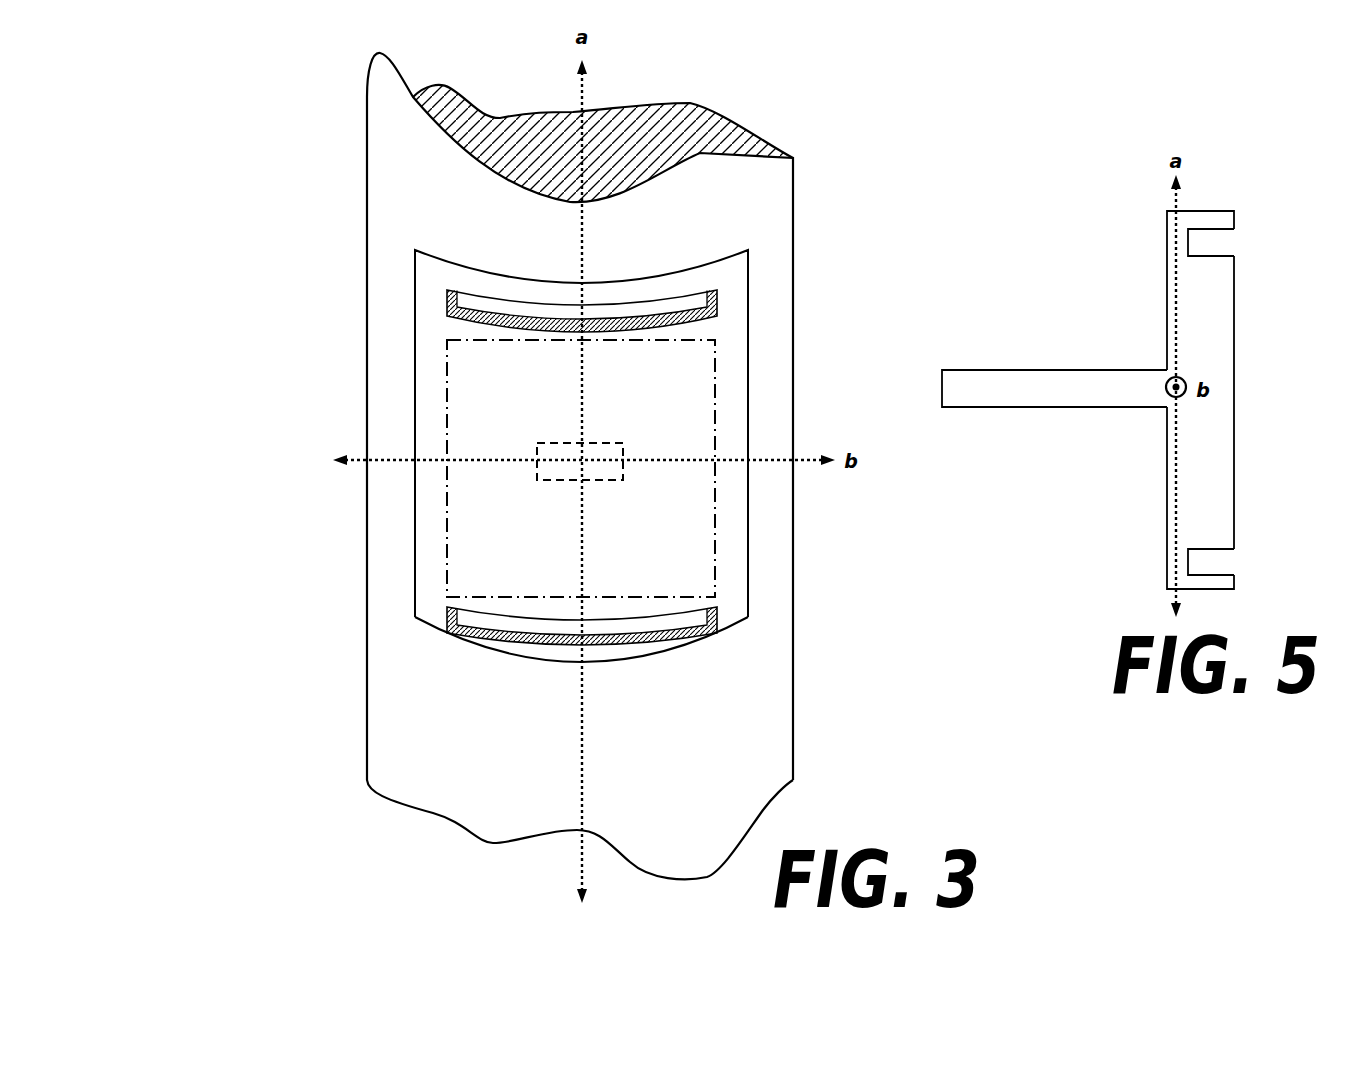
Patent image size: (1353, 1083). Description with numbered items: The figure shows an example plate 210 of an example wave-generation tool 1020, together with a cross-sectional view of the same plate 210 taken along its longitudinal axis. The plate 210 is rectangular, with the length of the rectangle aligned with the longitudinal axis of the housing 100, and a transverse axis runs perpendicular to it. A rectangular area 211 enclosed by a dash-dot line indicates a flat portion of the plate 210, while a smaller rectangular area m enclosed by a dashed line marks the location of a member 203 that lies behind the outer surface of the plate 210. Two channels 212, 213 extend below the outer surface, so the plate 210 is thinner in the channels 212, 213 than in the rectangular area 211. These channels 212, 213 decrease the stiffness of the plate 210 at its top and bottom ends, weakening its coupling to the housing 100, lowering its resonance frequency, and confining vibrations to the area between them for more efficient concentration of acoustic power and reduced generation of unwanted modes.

In FIG. 3, the housing 100 is at (643, 767).
In FIG. 3, the wave-generation tool 1020 is at (300, 183).
In FIG. 3, the plate 210 is at (728, 333).
In FIG. 5, the plate 210 is at (1122, 352).
In FIG. 3, the rectangular area 211 is at (633, 577).
In FIG. 5, the rectangular area 211 is at (1252, 386).
In FIG. 3, the channel 212 is at (504, 303).
In FIG. 5, the channel 212 is at (1224, 240).
In FIG. 3, the channel 213 is at (490, 634).
In FIG. 5, the channel 213 is at (1235, 562).
In FIG. 5, the member 203 is at (1030, 371).
In FIG. 3, the rectangular area m is at (606, 440).